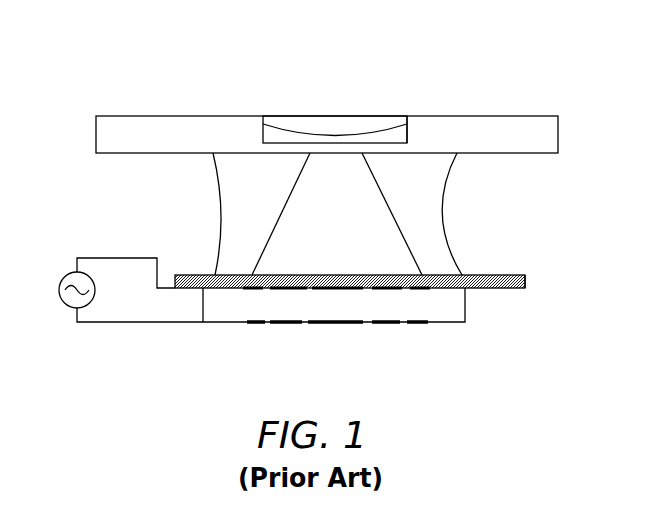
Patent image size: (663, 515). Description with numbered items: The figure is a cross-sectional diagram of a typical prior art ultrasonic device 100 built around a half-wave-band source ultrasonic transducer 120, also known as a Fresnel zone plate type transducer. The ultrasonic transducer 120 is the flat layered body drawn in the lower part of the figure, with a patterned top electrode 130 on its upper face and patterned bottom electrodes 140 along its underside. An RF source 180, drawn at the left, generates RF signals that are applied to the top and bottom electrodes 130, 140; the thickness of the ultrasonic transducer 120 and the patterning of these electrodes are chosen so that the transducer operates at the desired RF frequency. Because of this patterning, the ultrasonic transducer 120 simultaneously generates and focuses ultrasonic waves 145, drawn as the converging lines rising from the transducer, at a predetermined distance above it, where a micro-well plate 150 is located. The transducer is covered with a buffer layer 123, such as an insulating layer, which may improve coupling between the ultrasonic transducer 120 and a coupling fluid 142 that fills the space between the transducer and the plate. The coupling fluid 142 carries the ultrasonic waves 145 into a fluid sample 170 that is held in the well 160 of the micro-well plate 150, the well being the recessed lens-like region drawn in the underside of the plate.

The ultrasonic device 100 is at (528, 48).
The ultrasonic transducer 120 is at (385, 333).
The buffer layer 123 is at (525, 275).
The top electrode 130 is at (332, 275).
The bottom electrodes 140 is at (253, 322).
The coupling fluid 142 is at (237, 221).
The ultrasonic waves 145 is at (365, 201).
The micro-well plate 150 is at (118, 124).
The well 160 is at (269, 116).
The fluid sample 170 is at (397, 118).
The RF source 180 is at (67, 278).